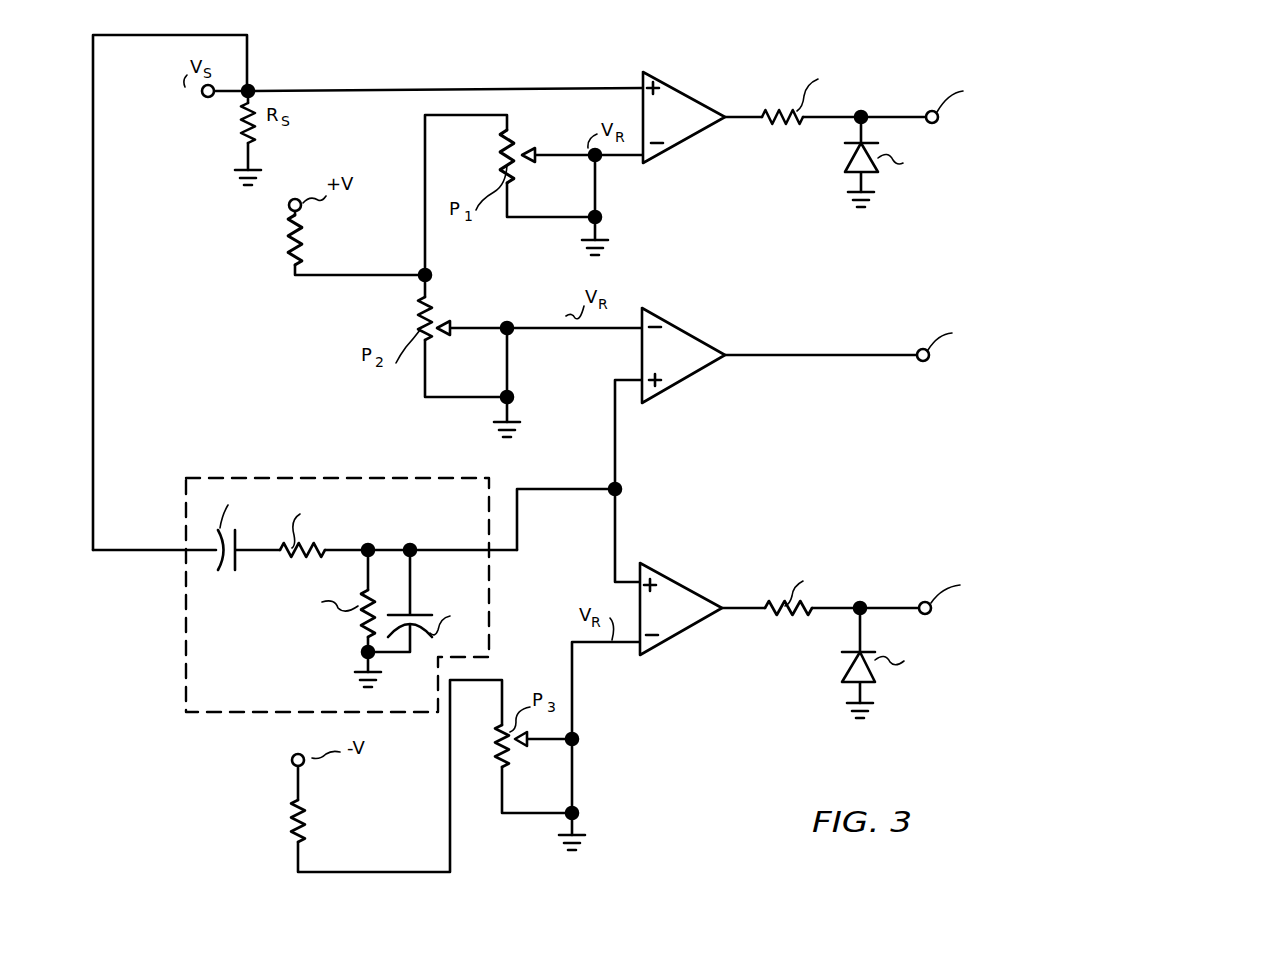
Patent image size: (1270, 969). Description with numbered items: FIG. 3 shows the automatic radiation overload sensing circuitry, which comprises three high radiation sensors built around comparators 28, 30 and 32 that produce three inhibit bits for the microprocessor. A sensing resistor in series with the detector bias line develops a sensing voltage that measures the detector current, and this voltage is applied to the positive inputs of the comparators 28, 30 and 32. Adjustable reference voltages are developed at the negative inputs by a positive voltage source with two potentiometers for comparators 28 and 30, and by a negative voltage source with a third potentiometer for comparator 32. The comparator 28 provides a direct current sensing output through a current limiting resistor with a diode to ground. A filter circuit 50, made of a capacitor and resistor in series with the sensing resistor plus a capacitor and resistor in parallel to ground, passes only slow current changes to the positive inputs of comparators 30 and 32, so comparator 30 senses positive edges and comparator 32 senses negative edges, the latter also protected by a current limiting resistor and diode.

The comparator 28 is at (734, 76).
The comparator 30 is at (700, 336).
The comparator 32 is at (690, 586).
The filter circuit 50 is at (356, 462).